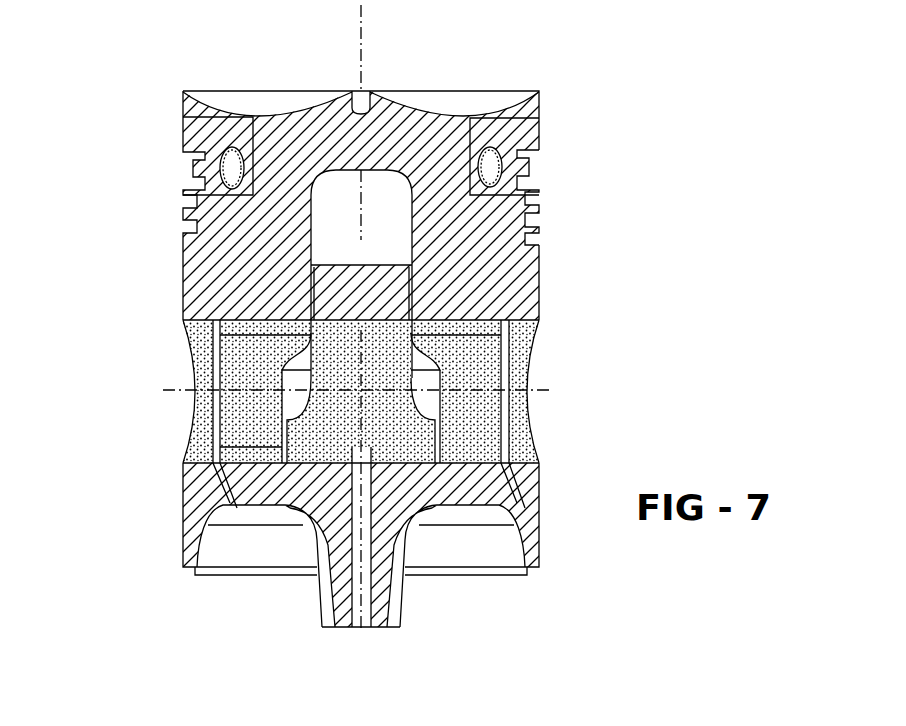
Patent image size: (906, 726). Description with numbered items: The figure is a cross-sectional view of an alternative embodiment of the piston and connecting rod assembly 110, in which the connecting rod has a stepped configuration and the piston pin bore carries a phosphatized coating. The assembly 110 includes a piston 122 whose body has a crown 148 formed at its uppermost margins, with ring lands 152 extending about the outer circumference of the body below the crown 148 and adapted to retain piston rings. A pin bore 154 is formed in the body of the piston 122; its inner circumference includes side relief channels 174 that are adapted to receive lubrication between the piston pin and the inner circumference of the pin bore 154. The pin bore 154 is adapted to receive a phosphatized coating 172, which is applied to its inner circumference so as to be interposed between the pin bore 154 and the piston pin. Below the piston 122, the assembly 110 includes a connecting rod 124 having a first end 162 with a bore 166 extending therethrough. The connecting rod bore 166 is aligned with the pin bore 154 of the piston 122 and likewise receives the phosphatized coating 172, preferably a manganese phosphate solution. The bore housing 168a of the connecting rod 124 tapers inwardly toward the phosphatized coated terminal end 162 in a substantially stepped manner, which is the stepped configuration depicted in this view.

The piston and connecting rod assembly 110 is at (125, 213).
The piston 122 is at (563, 125).
The connecting rod 124 is at (403, 600).
The crown 148 is at (454, 67).
The ring lands 152 is at (530, 194).
The pin bore 154 is at (552, 382).
The first end of connecting rod 162 is at (323, 263).
The connecting rod bore 166 is at (284, 371).
The bore housing 168a is at (418, 488).
The phosphatized coating 172 is at (232, 438).
The side relief channels 174 is at (198, 350).